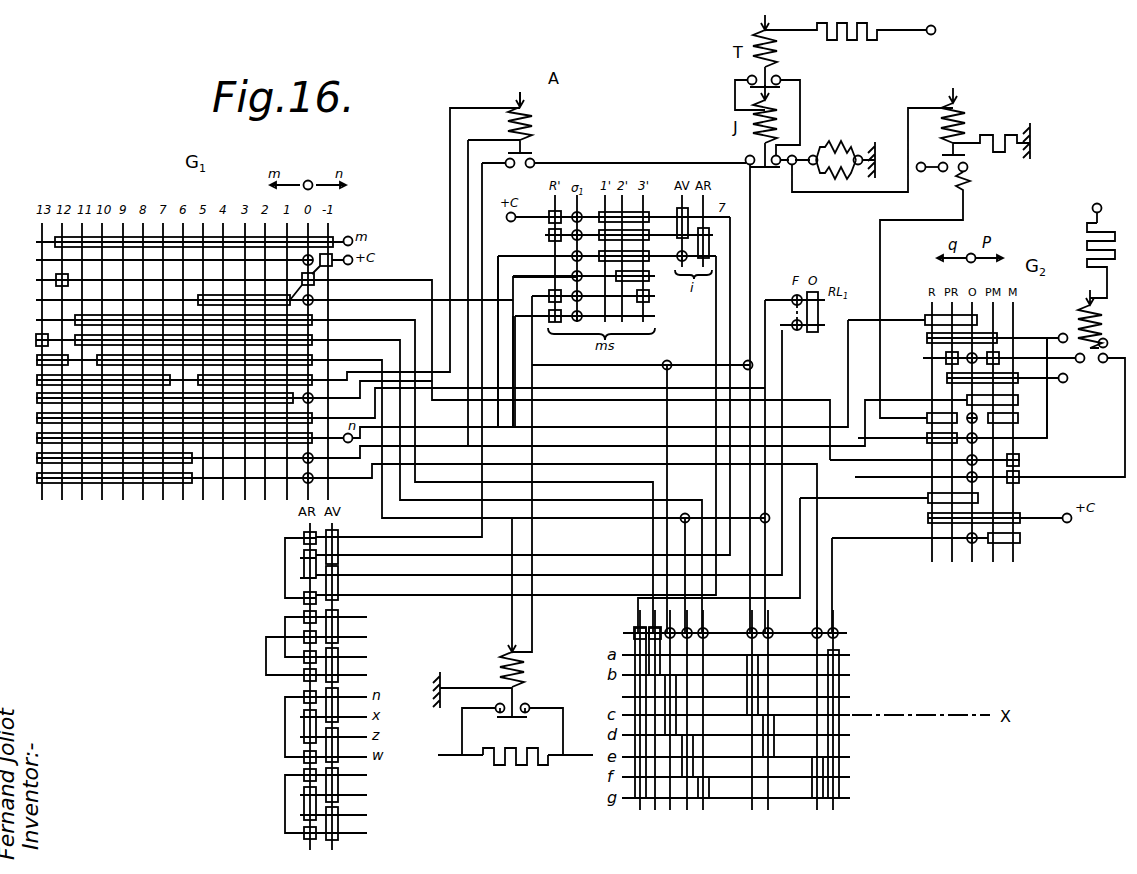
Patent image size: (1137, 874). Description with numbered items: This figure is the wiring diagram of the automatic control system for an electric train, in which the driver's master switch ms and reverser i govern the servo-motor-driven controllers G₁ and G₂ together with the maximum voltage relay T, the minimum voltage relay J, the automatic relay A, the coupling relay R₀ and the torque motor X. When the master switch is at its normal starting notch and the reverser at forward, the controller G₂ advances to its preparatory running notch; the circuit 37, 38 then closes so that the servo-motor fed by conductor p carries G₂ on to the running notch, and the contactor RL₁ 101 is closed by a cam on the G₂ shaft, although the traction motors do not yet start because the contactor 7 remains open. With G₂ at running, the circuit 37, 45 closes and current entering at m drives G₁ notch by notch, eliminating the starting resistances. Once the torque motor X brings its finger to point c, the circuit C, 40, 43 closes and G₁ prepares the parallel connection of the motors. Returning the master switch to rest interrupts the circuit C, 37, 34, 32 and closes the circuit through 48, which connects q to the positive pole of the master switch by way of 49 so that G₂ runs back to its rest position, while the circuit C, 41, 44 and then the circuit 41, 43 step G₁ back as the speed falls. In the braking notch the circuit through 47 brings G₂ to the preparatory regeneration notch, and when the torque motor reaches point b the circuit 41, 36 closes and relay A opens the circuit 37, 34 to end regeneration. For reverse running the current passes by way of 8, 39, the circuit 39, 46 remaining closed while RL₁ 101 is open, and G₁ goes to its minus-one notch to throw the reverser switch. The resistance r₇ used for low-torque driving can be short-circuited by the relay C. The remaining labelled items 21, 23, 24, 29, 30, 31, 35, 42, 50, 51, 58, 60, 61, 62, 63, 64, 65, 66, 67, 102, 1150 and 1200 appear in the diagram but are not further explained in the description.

The contactor 7 is at (523, 386).
The conductor 8 is at (516, 418).
The conductor 21 is at (737, 334).
The relay 23 is at (513, 534).
The conductor 24 is at (640, 380).
The relay T winding terminal 29 is at (768, 51).
The contact 30 is at (749, 86).
The contact 31 is at (786, 108).
The circuit contact 32 is at (863, 154).
The circuit contact 34 is at (652, 161).
The conductor 35 is at (418, 245).
The circuit contact 36 is at (564, 391).
The circuit conductor 37 is at (720, 348).
The circuit contact 38 is at (1080, 366).
The circuit conductor 39 is at (570, 469).
The circuit contact 40 is at (924, 665).
The circuit conductor 41 is at (797, 640).
The conductor 42 is at (543, 370).
The circuit contact 43 is at (558, 489).
The circuit contact 44 is at (520, 479).
The circuit contact 45 is at (651, 363).
The circuit contact 46 is at (577, 458).
The circuit contact 47 is at (665, 508).
The circuit contact 48 is at (951, 159).
The circuit conductor 49 is at (952, 307).
The contact 50 is at (1101, 319).
The contact 51 is at (1116, 347).
The contact 58 is at (999, 376).
The conductor 60 is at (362, 615).
The conductor 61 is at (362, 635).
The conductor 62 is at (362, 655).
The conductor 63 is at (362, 673).
The conductor 64 is at (362, 773).
The conductor 65 is at (362, 793).
The conductor 66 is at (362, 813).
The conductor 67 is at (362, 831).
The contactor RL1 101 is at (1005, 123).
The terminal 102 is at (1105, 203).
The resistor 1150 ohm 1150 is at (864, 41).
The resistor 1200 is at (1086, 260).